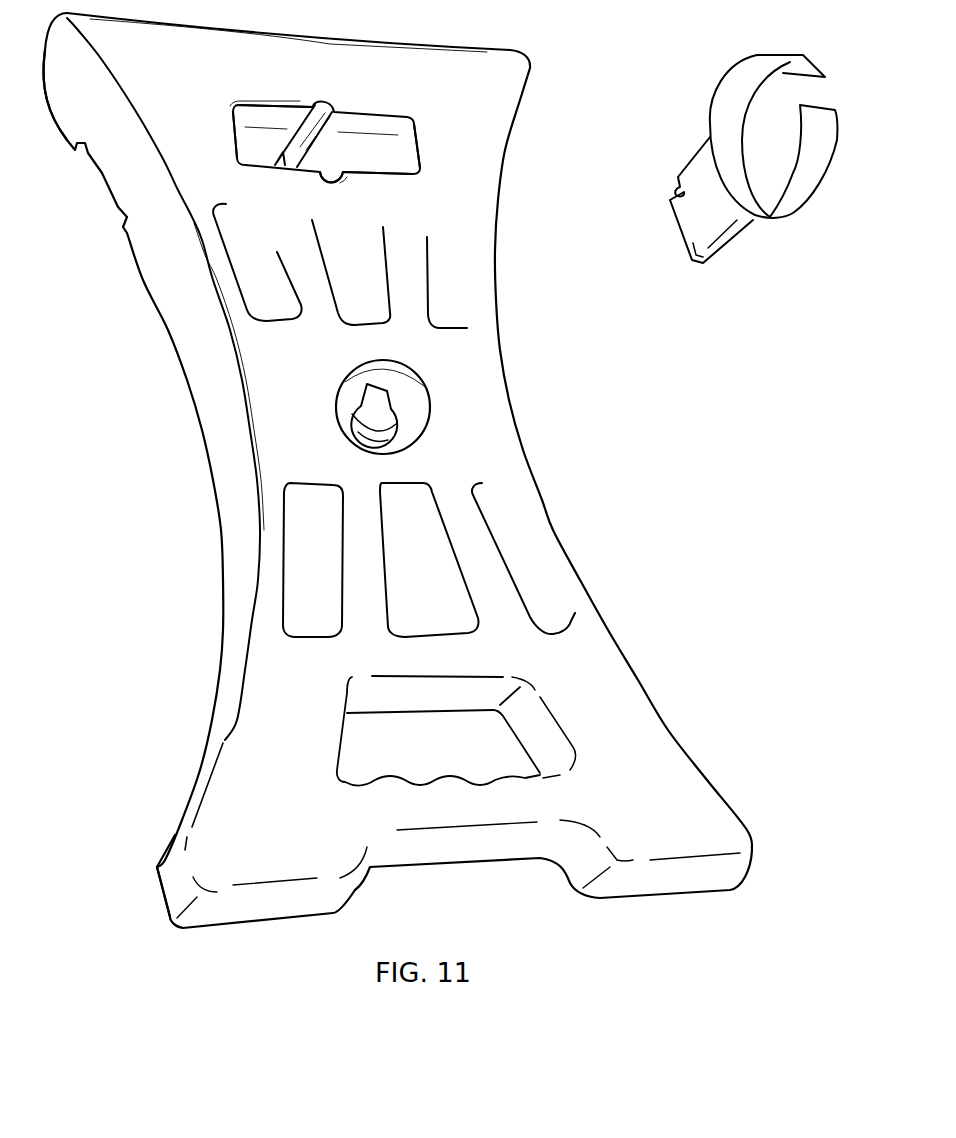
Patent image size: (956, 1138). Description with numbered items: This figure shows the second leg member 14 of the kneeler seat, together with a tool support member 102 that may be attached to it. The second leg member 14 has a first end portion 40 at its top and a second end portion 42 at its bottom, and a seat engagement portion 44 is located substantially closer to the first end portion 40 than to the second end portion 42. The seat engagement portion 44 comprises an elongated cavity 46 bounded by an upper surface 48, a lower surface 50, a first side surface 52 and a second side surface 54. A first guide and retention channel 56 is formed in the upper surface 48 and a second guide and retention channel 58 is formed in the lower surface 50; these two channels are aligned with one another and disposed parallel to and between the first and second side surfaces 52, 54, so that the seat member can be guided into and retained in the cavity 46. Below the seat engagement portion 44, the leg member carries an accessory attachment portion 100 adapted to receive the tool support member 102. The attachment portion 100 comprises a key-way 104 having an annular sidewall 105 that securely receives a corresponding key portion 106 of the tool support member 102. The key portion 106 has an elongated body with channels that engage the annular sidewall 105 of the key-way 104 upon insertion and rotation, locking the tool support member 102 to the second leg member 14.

The second leg member 14 is at (240, 448).
The first end portion 40 is at (65, 112).
The second end portion 42 is at (157, 867).
The seat engagement portion 44 is at (390, 102).
The elongated cavity 46 is at (373, 148).
The upper surface 48 is at (267, 112).
The lower surface 50 is at (383, 165).
The first side surface 52 is at (246, 143).
The second side surface 54 is at (407, 152).
The first guide and retention channel 56 is at (323, 95).
The second guide and retention channel 58 is at (330, 182).
The accessory attachment portion 100 is at (414, 411).
The tool support member 102 is at (751, 260).
The key-way 104 is at (363, 425).
The annular sidewall 105 is at (393, 427).
The key portion 106 is at (664, 239).